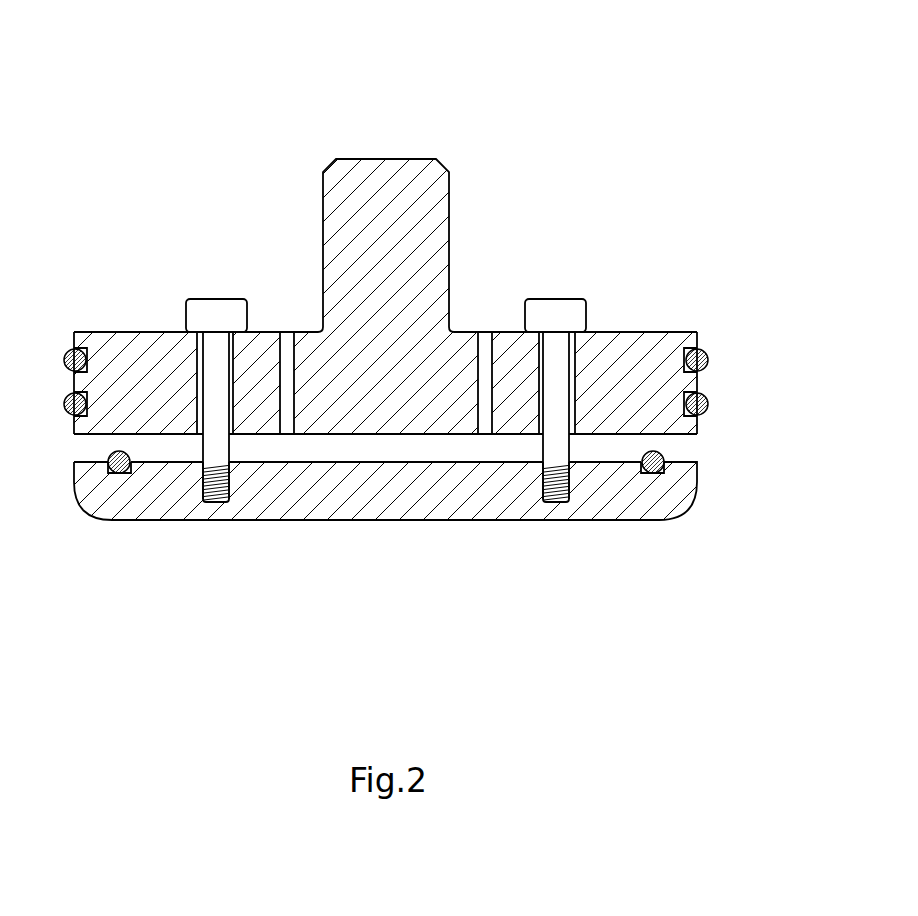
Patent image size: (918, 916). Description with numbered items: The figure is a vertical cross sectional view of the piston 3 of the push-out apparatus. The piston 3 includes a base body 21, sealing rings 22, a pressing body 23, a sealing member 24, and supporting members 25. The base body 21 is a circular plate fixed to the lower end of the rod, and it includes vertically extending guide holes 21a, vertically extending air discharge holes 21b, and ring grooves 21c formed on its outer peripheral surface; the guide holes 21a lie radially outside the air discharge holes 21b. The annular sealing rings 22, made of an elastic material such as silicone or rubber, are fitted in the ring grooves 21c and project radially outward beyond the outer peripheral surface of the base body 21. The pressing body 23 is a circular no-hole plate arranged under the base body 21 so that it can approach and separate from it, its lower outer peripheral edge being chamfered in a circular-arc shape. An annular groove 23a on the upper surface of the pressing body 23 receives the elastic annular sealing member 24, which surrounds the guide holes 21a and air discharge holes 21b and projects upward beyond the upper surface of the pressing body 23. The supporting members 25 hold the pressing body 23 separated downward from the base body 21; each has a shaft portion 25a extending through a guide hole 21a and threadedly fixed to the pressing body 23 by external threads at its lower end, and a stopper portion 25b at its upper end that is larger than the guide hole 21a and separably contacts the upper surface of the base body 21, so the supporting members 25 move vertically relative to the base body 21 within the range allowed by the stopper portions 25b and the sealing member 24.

The piston 3 is at (128, 135).
The base body 21 is at (99, 331).
The guide holes 21a is at (197, 363).
The air discharge holes 21b is at (289, 345).
The ring grooves 21c is at (684, 360).
The sealing rings 22 is at (708, 403).
The pressing body 23 is at (113, 521).
The annular groove 23a is at (663, 447).
The sealing member 24 is at (661, 447).
The supporting members 25 is at (387, 405).
The shaft portion 25a is at (223, 443).
The stopper portion 25b is at (230, 312).